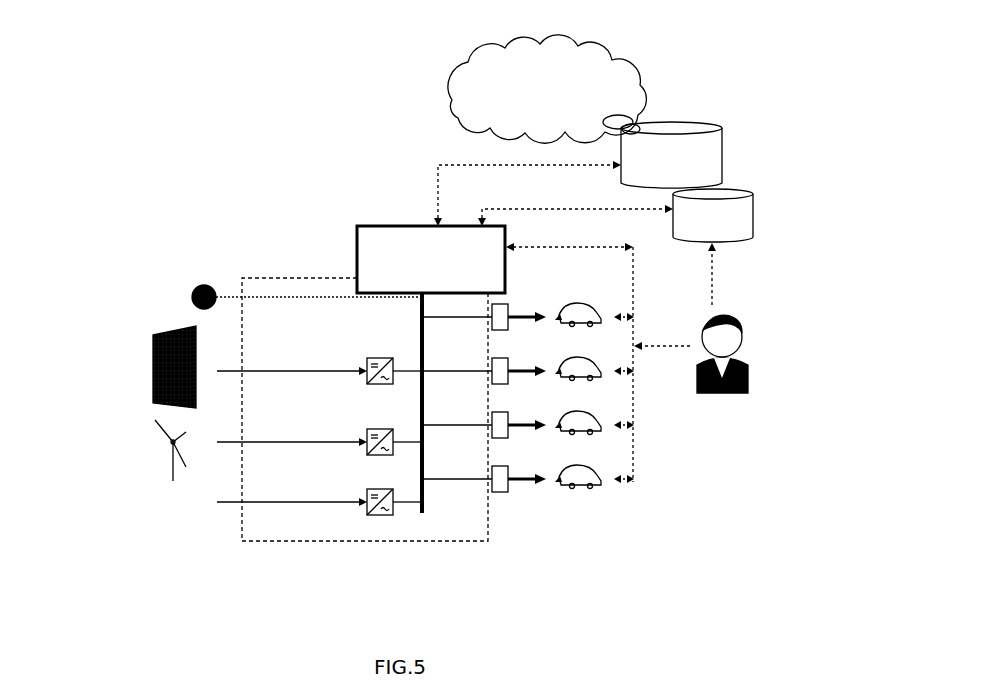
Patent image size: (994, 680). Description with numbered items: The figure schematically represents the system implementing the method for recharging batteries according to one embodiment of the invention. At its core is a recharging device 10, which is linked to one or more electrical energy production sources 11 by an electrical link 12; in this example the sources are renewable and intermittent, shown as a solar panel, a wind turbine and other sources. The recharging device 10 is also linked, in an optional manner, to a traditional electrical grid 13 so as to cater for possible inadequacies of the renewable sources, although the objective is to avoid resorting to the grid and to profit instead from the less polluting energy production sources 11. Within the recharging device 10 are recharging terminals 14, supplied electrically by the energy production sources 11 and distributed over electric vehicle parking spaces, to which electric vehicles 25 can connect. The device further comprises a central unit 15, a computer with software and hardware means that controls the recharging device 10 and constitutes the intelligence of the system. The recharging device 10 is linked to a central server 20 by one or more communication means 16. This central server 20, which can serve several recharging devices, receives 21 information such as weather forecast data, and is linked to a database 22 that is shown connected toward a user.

The recharging device 10 is at (350, 548).
The electrical energy production sources 11 is at (143, 505).
The electrical link 12 is at (285, 371).
The traditional electrical grid 13 is at (213, 286).
The recharging terminals 14 is at (492, 330).
The central unit 15 is at (357, 250).
The communication means 16 is at (507, 210).
The central server 20 is at (722, 140).
The information reception 21 is at (637, 122).
The database 22 is at (755, 210).
The electric vehicles 25 is at (597, 326).